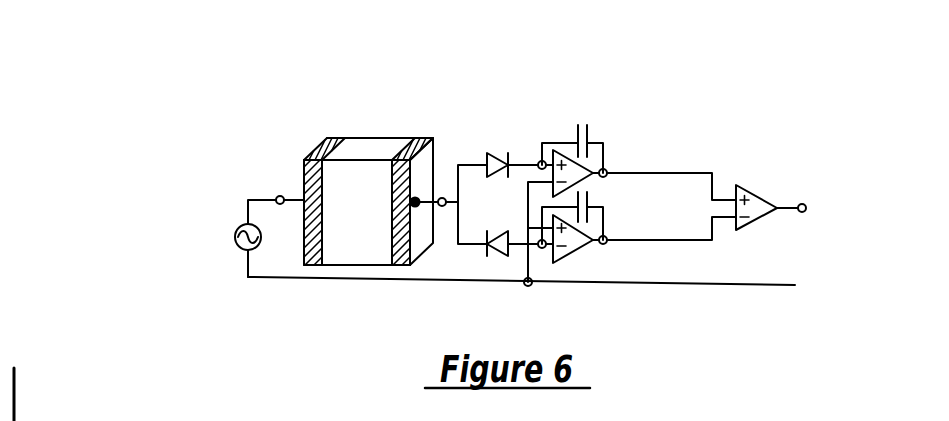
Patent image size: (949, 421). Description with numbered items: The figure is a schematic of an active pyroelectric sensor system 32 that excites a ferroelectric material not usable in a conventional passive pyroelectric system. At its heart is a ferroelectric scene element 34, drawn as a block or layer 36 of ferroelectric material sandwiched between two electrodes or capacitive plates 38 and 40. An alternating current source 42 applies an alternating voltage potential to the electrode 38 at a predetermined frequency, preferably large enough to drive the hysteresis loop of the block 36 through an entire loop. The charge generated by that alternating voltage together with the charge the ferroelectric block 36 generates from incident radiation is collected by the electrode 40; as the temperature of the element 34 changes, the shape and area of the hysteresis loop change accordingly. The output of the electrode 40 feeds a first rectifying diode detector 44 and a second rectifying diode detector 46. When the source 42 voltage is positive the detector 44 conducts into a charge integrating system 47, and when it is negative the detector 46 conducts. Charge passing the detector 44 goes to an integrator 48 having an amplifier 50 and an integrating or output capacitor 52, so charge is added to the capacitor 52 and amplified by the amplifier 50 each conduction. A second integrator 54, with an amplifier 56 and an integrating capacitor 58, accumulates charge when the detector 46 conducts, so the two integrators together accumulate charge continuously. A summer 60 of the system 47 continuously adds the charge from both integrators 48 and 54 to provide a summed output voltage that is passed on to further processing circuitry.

The pyroelectric sensor system 32 is at (747, 64).
The ferroelectric scene element 34 is at (389, 122).
The ferroelectric layer 36 is at (366, 142).
The electrode 38 is at (322, 158).
The electrode 40 is at (420, 140).
The alternating current source 42 is at (233, 236).
The first rectifying diode detector 44 is at (501, 153).
The second rectifying diode detector 46 is at (493, 258).
The charge integrating system 47 is at (674, 96).
The integrator 48 is at (606, 118).
The amplifier 50 is at (578, 184).
The integrating or output capacitor 52 is at (577, 127).
The second integrator 54 is at (605, 266).
The amplifier 56 is at (573, 252).
The integrating capacitor 58 is at (603, 213).
The summer 60 is at (757, 190).